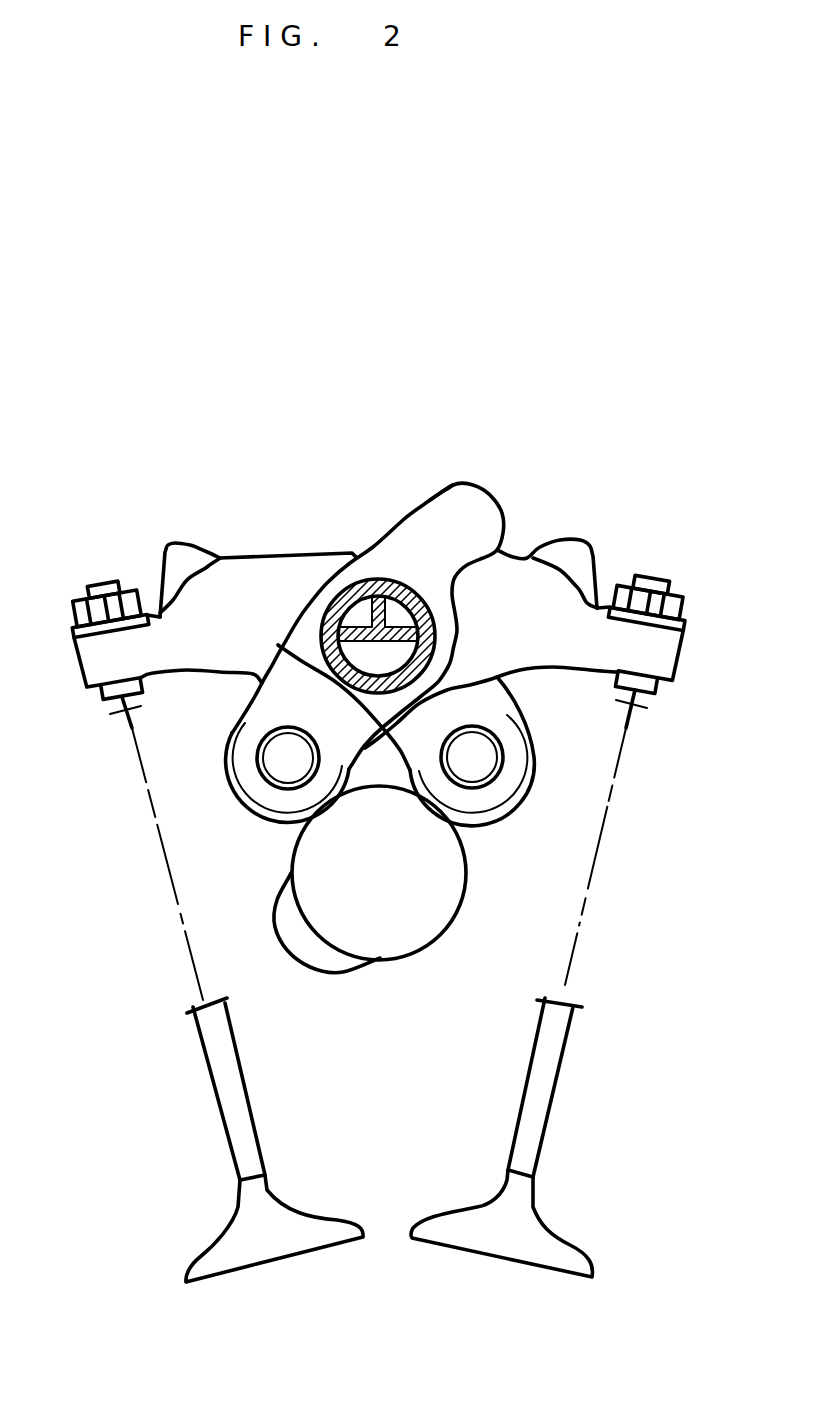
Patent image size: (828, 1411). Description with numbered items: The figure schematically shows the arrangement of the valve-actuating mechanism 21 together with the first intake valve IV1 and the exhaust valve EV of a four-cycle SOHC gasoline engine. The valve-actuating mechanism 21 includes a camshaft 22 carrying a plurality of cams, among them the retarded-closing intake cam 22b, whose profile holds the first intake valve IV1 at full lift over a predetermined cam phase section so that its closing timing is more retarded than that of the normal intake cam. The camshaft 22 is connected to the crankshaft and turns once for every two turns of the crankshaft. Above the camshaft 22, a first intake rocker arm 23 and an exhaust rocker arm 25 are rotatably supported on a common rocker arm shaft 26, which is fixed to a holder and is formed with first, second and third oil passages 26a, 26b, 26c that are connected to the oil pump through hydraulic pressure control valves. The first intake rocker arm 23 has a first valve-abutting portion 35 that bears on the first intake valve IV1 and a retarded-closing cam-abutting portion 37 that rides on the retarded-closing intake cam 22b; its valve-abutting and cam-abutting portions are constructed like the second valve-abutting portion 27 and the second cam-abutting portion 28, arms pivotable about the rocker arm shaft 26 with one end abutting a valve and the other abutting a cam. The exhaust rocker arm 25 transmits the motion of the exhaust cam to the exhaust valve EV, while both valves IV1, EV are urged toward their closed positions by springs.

The valve-actuating mechanism 21 is at (450, 298).
The camshaft 22 is at (430, 880).
The retarded-closing intake cam 22b is at (290, 910).
The first intake rocker arm 23 is at (586, 508).
The exhaust rocker arm 25 is at (144, 518).
The rocker arm shaft 26 is at (363, 580).
The first oil passage 26a is at (398, 587).
The second oil passage 26b is at (400, 658).
The third oil passage 26c is at (357, 617).
The second valve-abutting portion 27 is at (183, 553).
The second cam-abutting portion 28 is at (503, 712).
The first valve-abutting portion 35 is at (580, 577).
The retarded-closing cam-abutting portion 37 is at (263, 712).
The exhaust valve EV is at (225, 1247).
The first intake valve IV1 is at (520, 1230).